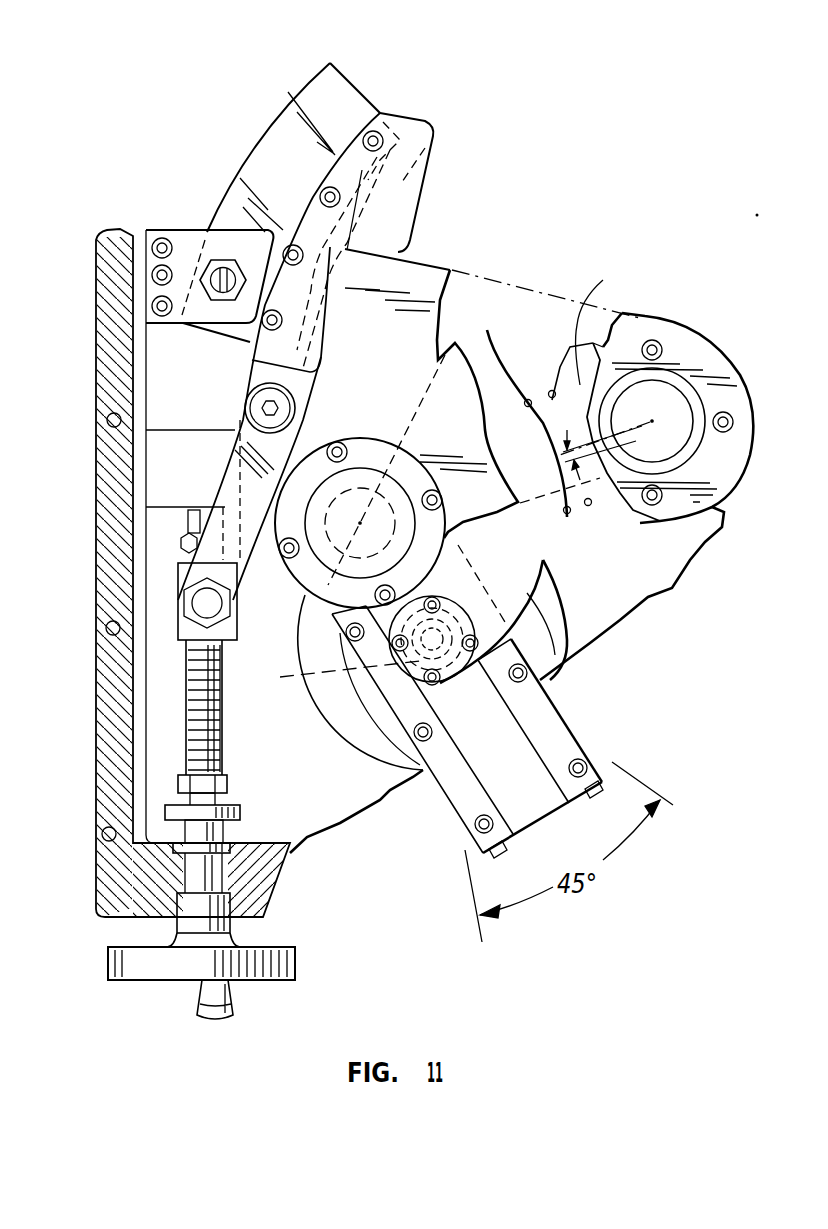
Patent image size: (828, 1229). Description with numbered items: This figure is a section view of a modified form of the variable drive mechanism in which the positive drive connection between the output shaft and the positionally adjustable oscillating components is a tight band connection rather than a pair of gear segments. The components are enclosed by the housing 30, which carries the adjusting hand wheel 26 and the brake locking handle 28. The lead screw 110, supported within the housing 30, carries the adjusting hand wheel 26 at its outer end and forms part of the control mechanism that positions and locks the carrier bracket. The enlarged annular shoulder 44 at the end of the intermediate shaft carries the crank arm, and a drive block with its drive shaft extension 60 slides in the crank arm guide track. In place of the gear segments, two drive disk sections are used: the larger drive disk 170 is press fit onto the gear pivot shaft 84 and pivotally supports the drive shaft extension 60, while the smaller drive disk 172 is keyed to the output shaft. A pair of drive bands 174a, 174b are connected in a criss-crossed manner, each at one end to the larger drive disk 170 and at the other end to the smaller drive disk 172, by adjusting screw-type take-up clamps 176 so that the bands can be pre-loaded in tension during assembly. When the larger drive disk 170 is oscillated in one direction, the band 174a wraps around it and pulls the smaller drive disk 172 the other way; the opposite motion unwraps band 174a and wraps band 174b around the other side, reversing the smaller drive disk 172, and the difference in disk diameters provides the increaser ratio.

The adjusting hand wheel 26 is at (290, 963).
The brake locking handle 28 is at (223, 1005).
The housing 30 is at (108, 733).
The enlarged annular shoulder 44 is at (363, 704).
The drive shaft extension 60 is at (335, 672).
The gear pivot shaft 84 is at (417, 456).
The lead screw 110 is at (218, 731).
The larger drive disk 170 is at (543, 675).
The smaller drive disk 172 is at (546, 322).
The drive band 174a is at (538, 621).
The drive band 174b is at (534, 420).
The adjusting screw-type take-up clamps 176 is at (526, 401).